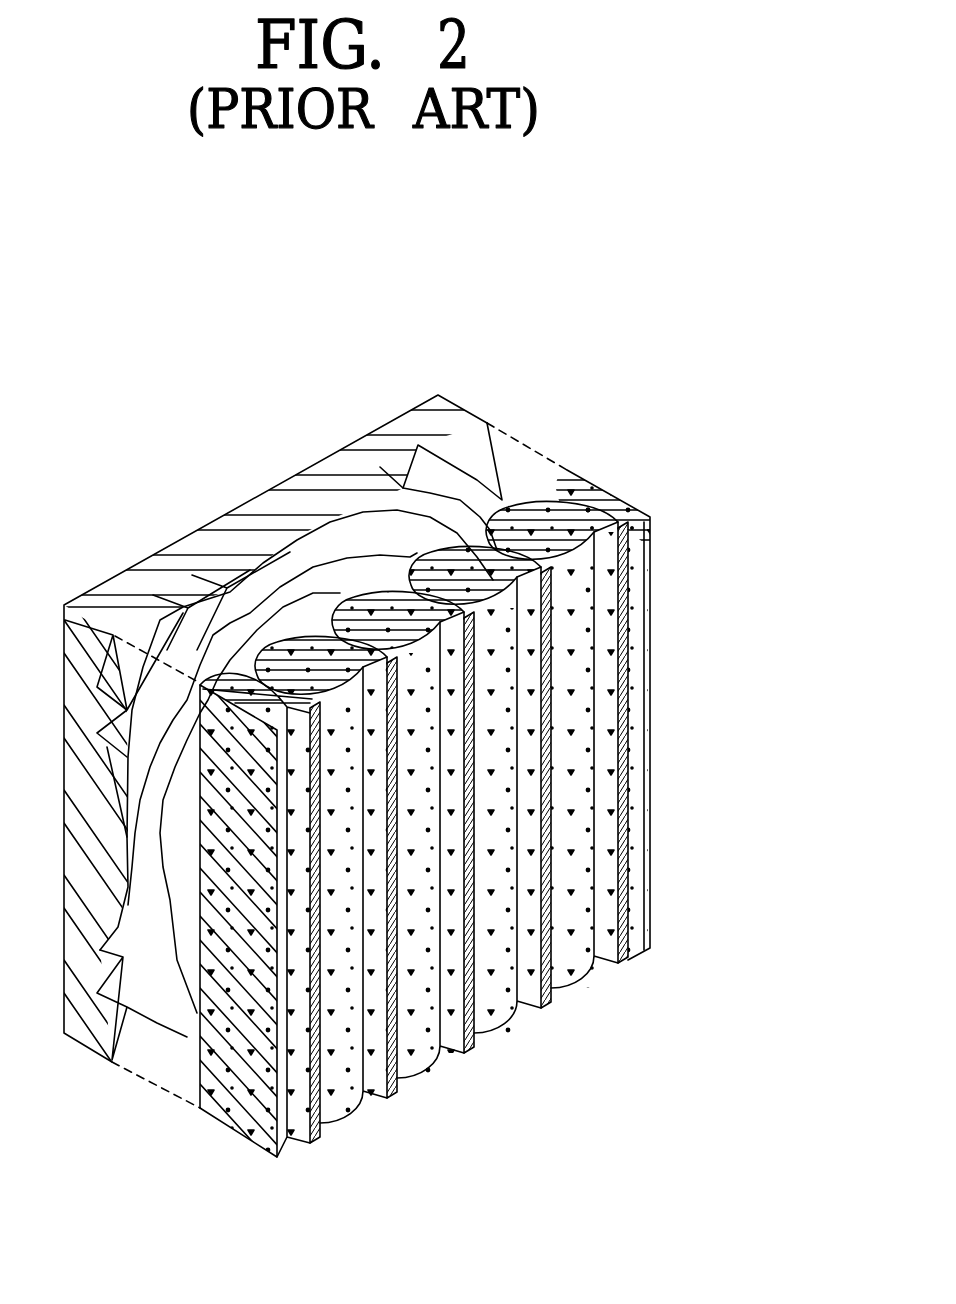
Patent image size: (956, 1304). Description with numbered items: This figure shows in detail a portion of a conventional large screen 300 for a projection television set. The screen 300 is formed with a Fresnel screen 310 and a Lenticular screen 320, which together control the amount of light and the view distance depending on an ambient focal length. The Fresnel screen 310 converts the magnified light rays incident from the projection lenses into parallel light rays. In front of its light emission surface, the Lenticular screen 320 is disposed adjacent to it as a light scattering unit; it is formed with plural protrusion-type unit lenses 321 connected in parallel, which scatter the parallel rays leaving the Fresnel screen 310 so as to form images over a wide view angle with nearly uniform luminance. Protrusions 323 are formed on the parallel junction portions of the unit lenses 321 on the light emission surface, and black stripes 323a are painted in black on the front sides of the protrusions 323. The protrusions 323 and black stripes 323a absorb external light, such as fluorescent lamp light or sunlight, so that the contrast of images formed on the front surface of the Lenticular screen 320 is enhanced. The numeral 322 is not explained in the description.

The screen 300 is at (205, 348).
The Fresnel screen 310 is at (480, 378).
The Lenticular screen 320 is at (626, 462).
The protrusion-type unit lens 321 is at (460, 580).
The negative electrode plate 322 is at (578, 688).
The protrusion 323 is at (640, 525).
The black stripe 323a is at (630, 786).